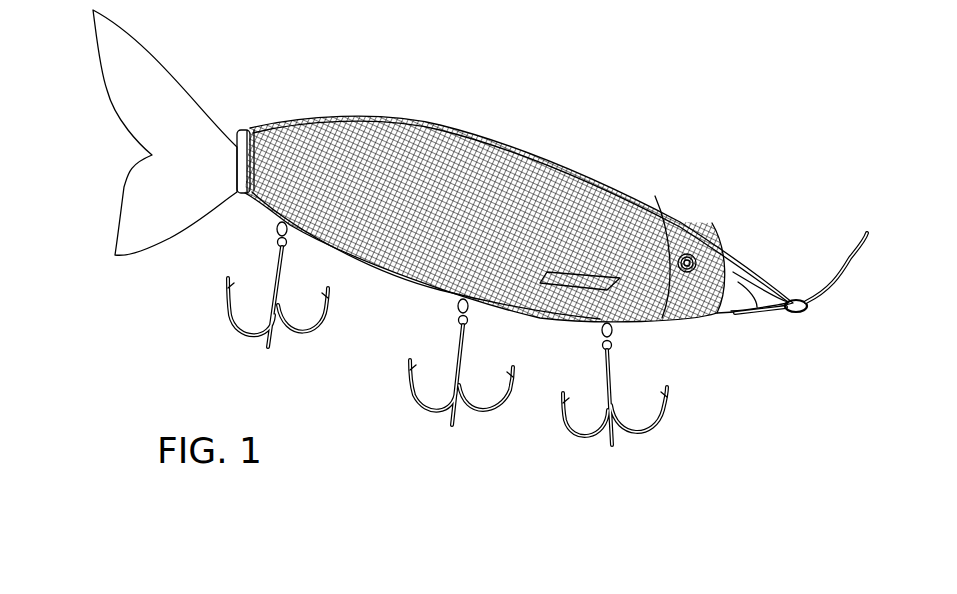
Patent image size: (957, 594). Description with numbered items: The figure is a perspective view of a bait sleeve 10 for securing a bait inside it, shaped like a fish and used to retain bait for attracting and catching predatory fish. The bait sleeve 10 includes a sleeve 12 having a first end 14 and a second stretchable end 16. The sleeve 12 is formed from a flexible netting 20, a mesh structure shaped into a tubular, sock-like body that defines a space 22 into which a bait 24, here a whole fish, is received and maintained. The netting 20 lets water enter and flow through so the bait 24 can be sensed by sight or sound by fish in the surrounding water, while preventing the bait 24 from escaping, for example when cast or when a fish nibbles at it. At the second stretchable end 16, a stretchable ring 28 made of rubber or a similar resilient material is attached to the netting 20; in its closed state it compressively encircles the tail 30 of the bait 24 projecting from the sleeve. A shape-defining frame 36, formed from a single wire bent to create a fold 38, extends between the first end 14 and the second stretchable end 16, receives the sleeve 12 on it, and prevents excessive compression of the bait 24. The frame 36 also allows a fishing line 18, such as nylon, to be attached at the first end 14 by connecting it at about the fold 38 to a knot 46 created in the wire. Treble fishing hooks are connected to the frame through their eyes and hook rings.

The bait sleeve 10 is at (680, 80).
The sleeve 12 is at (503, 151).
The first end 14 is at (740, 238).
The second stretchable end 16 is at (259, 103).
The fishing line 18 is at (850, 252).
The flexible netting 20 is at (530, 167).
The space 22 is at (313, 117).
The bait 24 is at (123, 205).
The stretchable ring 28 is at (236, 195).
The tail 30 is at (213, 145).
The shape-defining frame 36 is at (430, 122).
The fold 38 is at (768, 325).
The knot 46 is at (805, 313).